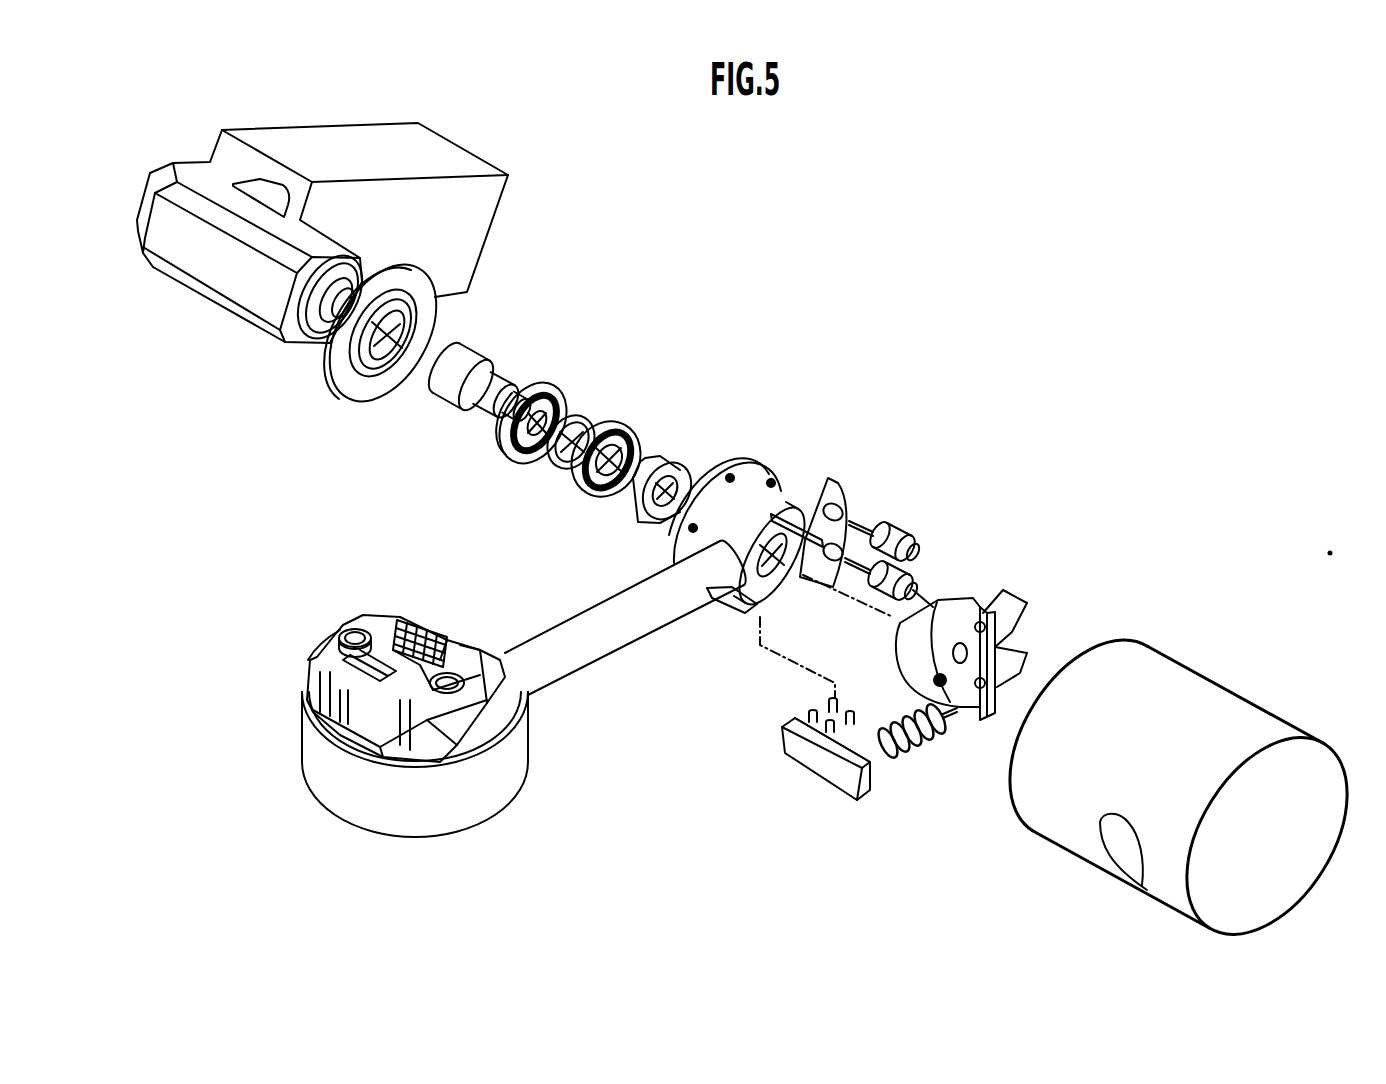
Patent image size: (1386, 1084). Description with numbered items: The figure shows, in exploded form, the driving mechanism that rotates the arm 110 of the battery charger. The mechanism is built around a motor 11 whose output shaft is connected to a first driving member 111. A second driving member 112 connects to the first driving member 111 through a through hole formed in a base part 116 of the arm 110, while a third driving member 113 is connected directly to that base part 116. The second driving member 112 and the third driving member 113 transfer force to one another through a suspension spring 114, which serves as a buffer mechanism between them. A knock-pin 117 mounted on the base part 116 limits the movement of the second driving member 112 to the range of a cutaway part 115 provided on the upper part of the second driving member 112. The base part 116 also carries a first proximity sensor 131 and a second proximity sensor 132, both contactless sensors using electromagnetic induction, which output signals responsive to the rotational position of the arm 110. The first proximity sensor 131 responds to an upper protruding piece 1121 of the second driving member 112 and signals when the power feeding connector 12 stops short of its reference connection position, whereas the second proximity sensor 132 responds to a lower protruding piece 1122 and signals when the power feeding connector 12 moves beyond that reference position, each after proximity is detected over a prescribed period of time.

The motor 11 is at (490, 205).
The first driving member 111 is at (485, 355).
The arm 110 is at (590, 603).
The base part 116 is at (738, 462).
The knock-pin 117 is at (805, 523).
The cutaway part 115 is at (917, 613).
The first proximity sensor 131 is at (900, 530).
The second proximity sensor 132 is at (900, 573).
The power feeding connector 12 is at (300, 620).
The third driving member 113 is at (773, 737).
The suspension spring 114 is at (920, 763).
The second driving member 112 is at (1075, 580).
The upper protruding piece 1121 is at (1010, 588).
The lower protruding piece 1122 is at (1030, 680).